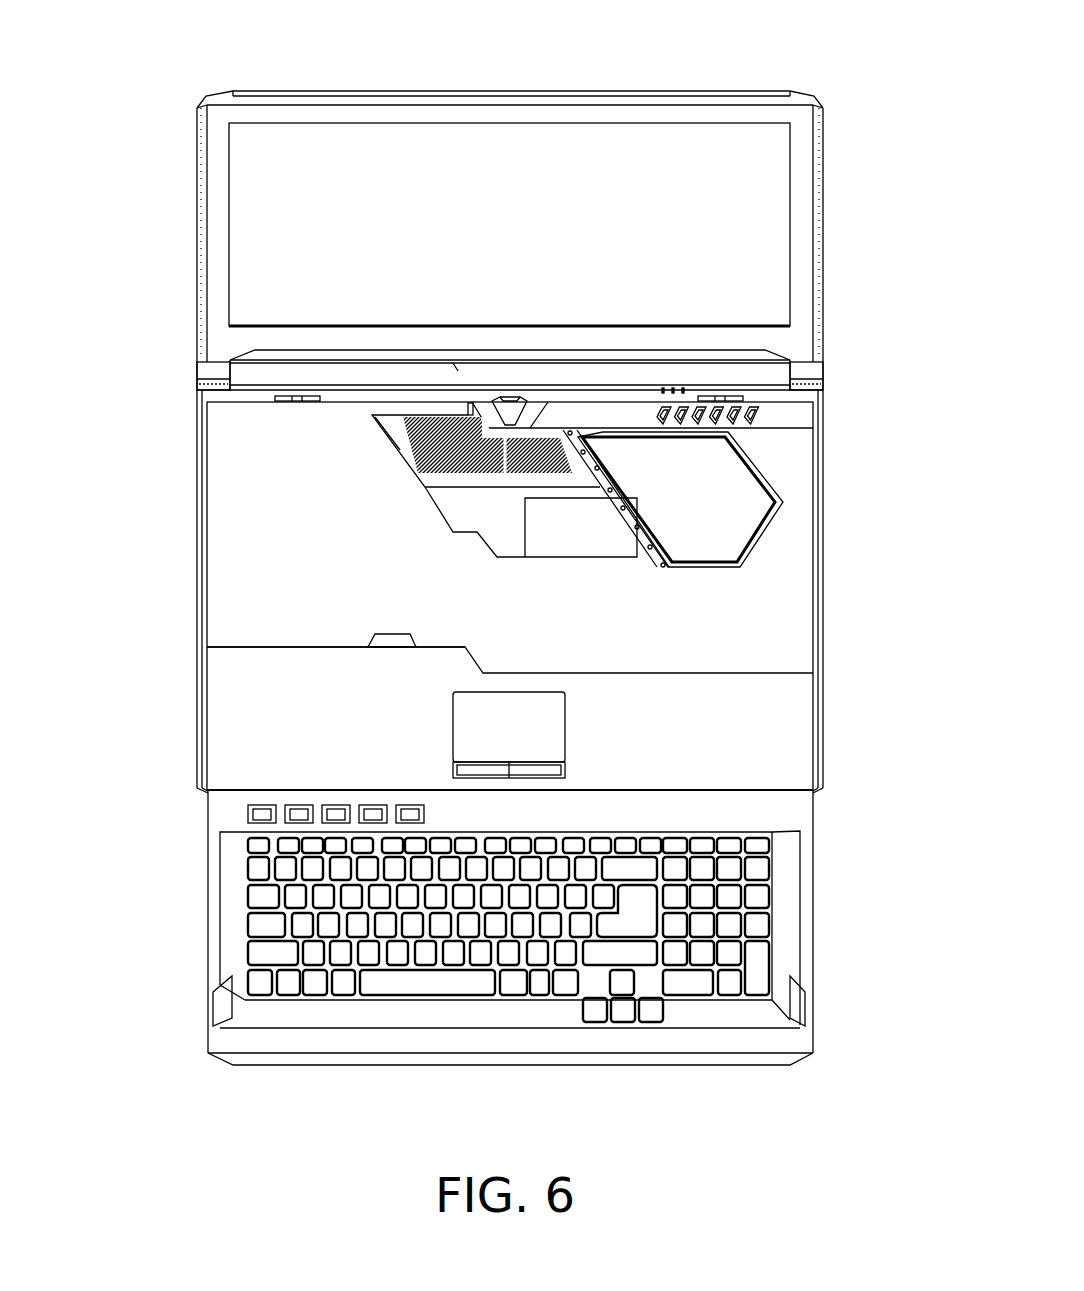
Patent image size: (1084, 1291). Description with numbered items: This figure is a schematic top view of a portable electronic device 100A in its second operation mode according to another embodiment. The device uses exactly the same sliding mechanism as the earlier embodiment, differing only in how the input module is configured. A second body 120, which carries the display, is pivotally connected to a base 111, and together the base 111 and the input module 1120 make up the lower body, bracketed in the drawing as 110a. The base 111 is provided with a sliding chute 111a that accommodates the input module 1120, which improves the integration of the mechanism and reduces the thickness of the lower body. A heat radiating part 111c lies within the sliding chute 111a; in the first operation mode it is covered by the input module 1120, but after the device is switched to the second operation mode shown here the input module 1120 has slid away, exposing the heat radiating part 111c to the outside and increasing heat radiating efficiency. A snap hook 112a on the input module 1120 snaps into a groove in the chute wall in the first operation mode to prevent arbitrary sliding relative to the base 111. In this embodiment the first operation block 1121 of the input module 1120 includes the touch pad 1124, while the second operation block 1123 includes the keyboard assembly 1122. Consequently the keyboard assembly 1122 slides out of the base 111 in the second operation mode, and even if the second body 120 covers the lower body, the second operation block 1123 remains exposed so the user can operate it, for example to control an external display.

The portable electronic device 100A is at (917, 827).
The second body 120 is at (480, 162).
The host 110a is at (900, 303).
The base 111 is at (814, 527).
The sliding chute 111a is at (250, 512).
The heat radiating part 111c is at (570, 460).
The snap hook 112a is at (390, 634).
The input module 1120 is at (498, 744).
The first operation block 1121 is at (230, 750).
The keyboard assembly 1122 is at (398, 983).
The second operation block 1123 is at (232, 940).
The touch pad 1124 is at (533, 731).